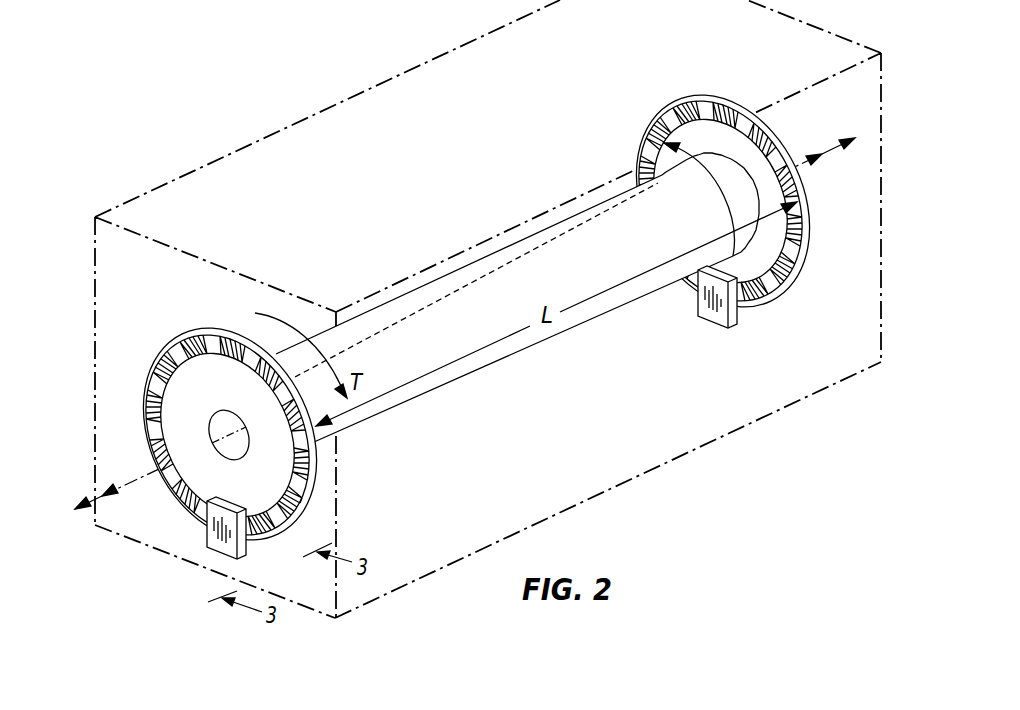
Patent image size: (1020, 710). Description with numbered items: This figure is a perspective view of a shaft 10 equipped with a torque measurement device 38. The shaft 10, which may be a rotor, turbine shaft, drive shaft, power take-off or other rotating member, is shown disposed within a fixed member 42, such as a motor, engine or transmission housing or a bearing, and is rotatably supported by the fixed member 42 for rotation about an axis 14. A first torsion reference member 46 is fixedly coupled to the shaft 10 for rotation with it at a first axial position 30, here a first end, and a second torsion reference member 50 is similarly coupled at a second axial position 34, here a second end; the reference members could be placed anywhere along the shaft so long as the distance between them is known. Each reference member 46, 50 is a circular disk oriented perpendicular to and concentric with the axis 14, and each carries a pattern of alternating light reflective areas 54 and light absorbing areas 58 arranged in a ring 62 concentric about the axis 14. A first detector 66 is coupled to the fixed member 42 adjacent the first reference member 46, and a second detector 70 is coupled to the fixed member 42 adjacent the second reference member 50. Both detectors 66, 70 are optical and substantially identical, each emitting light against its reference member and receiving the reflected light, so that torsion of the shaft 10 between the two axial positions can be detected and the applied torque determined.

The shaft 10 is at (488, 362).
The axis 14 is at (86, 498).
The first axial position 30 is at (206, 429).
The second axial position 34 is at (687, 113).
The torque measurement device 38 is at (196, 126).
The fixed member 42 is at (695, 455).
The first torsion reference member 46 is at (218, 329).
The second torsion reference member 50 is at (730, 97).
The light reflective areas 54 is at (152, 388).
The light absorbing areas 58 is at (148, 412).
The ring 62 is at (306, 484).
The first detector 66 is at (247, 551).
The second detector 70 is at (698, 313).